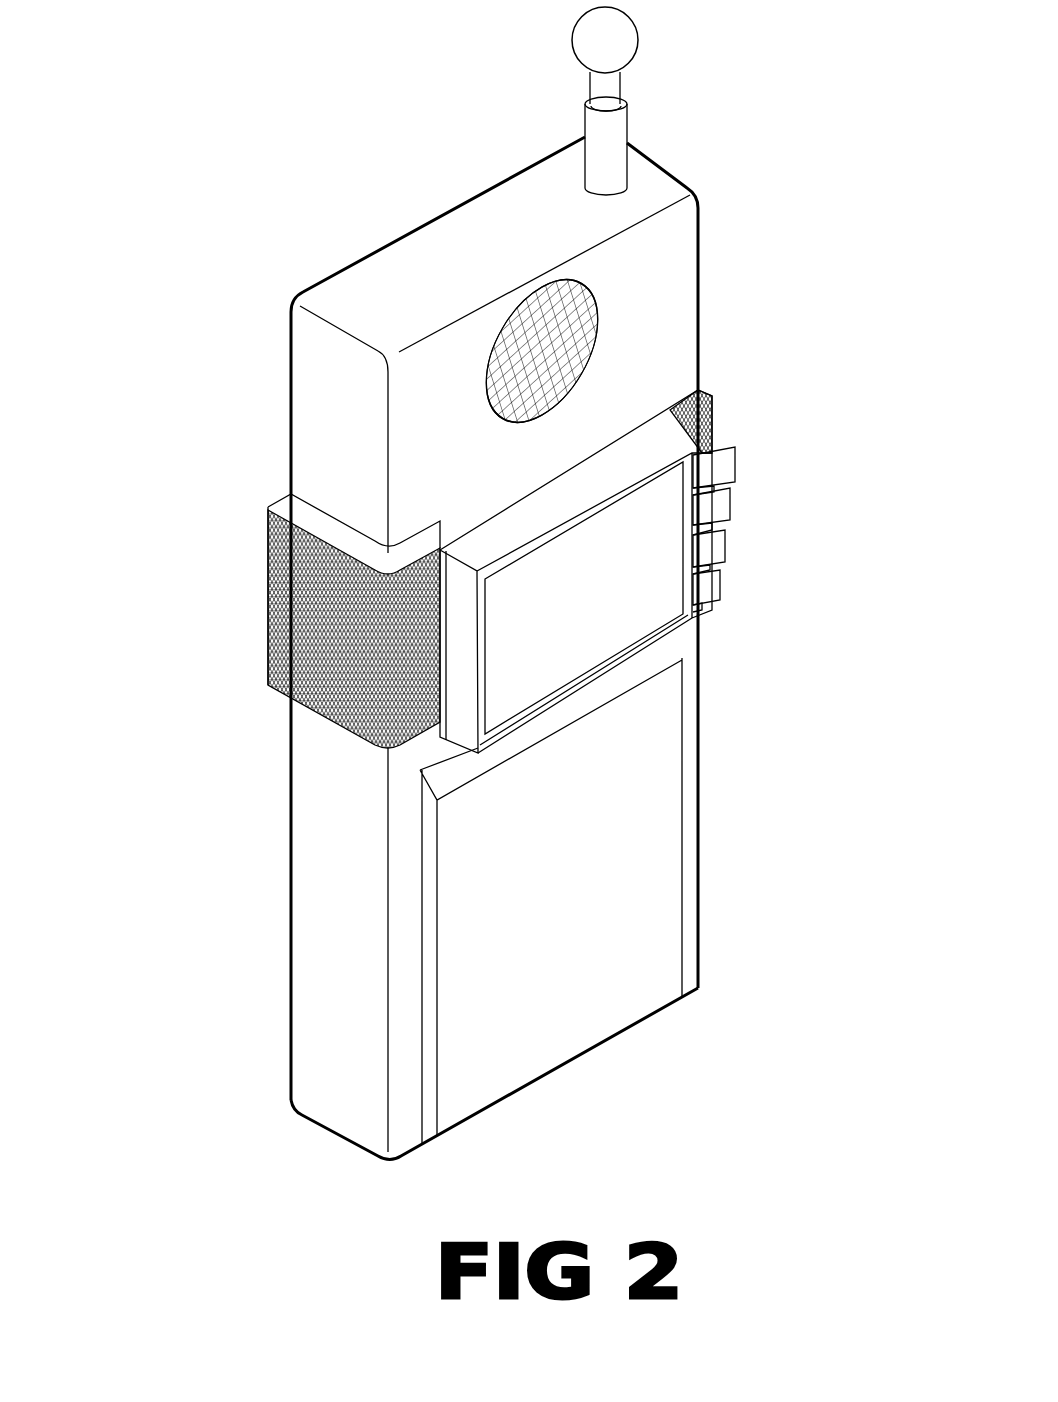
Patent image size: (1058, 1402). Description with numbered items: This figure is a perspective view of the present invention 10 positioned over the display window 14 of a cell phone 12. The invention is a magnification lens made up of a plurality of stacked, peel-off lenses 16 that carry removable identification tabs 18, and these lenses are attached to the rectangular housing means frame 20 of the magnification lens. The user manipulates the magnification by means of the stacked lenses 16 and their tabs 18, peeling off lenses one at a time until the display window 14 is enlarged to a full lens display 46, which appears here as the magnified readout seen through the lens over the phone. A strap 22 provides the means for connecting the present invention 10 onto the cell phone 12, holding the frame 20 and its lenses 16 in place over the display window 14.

The present invention 10 is at (173, 753).
The cell phone 12 is at (705, 893).
The display window 14 is at (465, 535).
The stacked peel-off lenses 16 is at (563, 557).
The removable identification tabs 18 is at (720, 588).
The rectangular housing means frame 20 is at (713, 417).
The strap 22 is at (268, 578).
The full lens display 46 is at (617, 593).